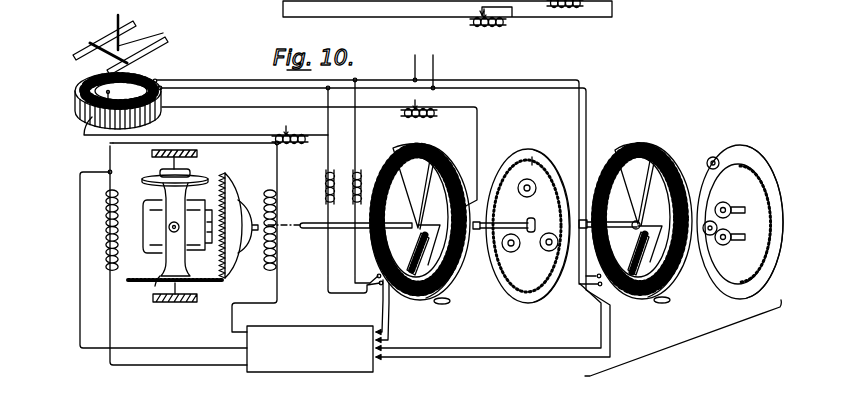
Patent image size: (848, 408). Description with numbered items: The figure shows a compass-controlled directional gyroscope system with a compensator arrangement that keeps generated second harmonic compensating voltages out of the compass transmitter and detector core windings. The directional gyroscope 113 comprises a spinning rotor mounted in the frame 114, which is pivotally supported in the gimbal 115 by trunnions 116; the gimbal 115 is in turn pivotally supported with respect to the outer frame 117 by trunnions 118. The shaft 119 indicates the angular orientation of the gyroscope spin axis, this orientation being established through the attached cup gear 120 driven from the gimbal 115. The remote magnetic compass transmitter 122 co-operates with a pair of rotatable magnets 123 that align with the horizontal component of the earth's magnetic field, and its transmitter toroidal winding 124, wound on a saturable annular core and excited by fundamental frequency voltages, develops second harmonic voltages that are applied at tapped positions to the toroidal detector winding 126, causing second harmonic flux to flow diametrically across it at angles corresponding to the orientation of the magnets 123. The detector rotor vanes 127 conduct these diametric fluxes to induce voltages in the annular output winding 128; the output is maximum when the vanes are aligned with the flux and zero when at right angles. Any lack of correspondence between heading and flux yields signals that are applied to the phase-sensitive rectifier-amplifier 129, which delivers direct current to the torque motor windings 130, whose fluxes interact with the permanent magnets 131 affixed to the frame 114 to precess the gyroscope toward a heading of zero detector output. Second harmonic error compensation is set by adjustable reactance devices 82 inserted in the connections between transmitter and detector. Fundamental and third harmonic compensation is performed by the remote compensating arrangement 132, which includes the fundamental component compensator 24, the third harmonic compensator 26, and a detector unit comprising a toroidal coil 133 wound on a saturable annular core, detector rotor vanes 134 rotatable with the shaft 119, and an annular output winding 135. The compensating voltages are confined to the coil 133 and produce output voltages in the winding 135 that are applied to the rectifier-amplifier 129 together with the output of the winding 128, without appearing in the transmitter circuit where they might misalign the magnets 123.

The fundamental component compensator 24 is at (755, 149).
The third harmonic compensator 26 is at (524, 150).
The adjustable reactance device 82 is at (508, 22).
The directional gyroscope 113 is at (205, 300).
The frame 114 is at (158, 200).
The gimbal 115 is at (160, 290).
The trunnions 116 is at (172, 234).
The outer frame 117 is at (152, 155).
The trunnions 118 is at (190, 170).
The shaft 119 is at (255, 232).
The cup gear 120 is at (232, 180).
The remote magnetic compass transmitter 122 is at (70, 115).
The rotatable magnets 123 is at (134, 24).
The transmitter toroidal winding 124 is at (78, 89).
The toroidal detector winding 126 is at (454, 165).
The detector rotor vanes 127 is at (406, 157).
The annular output winding 128 is at (407, 262).
The phase-sensitive rectifier-amplifier 129 is at (355, 373).
The torque motor windings 130 is at (108, 222).
The permanent magnets 131 is at (160, 242).
The compensating arrangement 132 is at (696, 102).
The toroidal coil 133 is at (675, 180).
The detector rotor vanes 134 is at (625, 150).
The annular output winding 135 is at (628, 259).